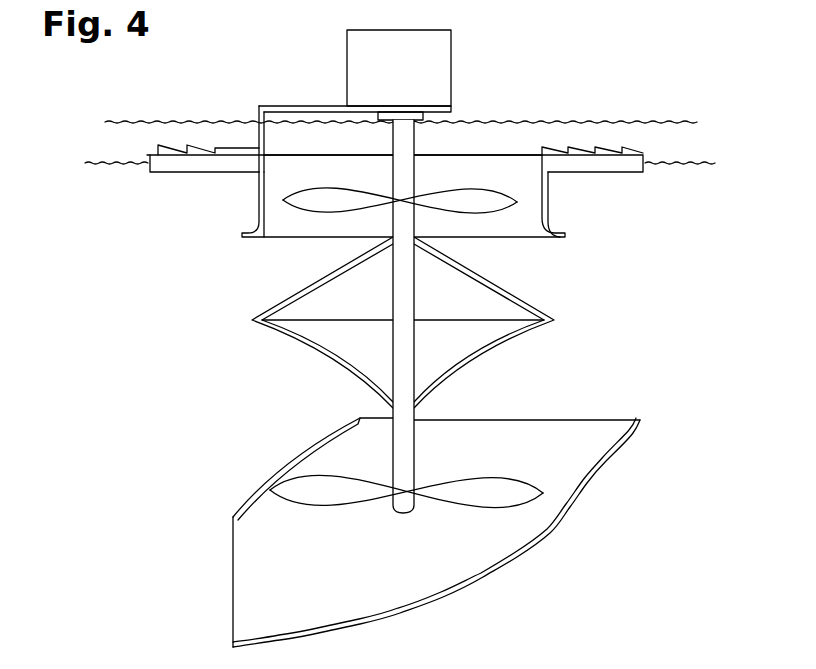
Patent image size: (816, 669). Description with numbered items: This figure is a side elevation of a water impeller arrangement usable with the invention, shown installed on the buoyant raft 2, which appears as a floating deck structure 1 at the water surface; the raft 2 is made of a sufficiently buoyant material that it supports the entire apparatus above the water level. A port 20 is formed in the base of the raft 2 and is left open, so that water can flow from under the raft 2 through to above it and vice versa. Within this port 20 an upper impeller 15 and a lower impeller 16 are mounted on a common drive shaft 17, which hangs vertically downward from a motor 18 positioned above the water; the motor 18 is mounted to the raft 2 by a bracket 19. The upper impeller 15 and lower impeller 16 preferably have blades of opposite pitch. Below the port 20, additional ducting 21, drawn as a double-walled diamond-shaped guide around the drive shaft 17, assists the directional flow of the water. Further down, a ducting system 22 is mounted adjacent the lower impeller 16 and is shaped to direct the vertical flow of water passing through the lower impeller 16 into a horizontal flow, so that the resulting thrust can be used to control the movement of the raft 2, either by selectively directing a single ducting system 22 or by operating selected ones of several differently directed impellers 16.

The hull deck 1 is at (626, 175).
The buoyant raft 2 is at (587, 178).
The upper impeller 15 is at (506, 208).
The lower impeller 16 is at (517, 490).
The drive shaft 17 is at (416, 412).
The motor 18 is at (450, 83).
The bracket 19 is at (262, 105).
The port 20 is at (262, 240).
The ducting 21 is at (280, 335).
The ducting system 22 is at (260, 483).